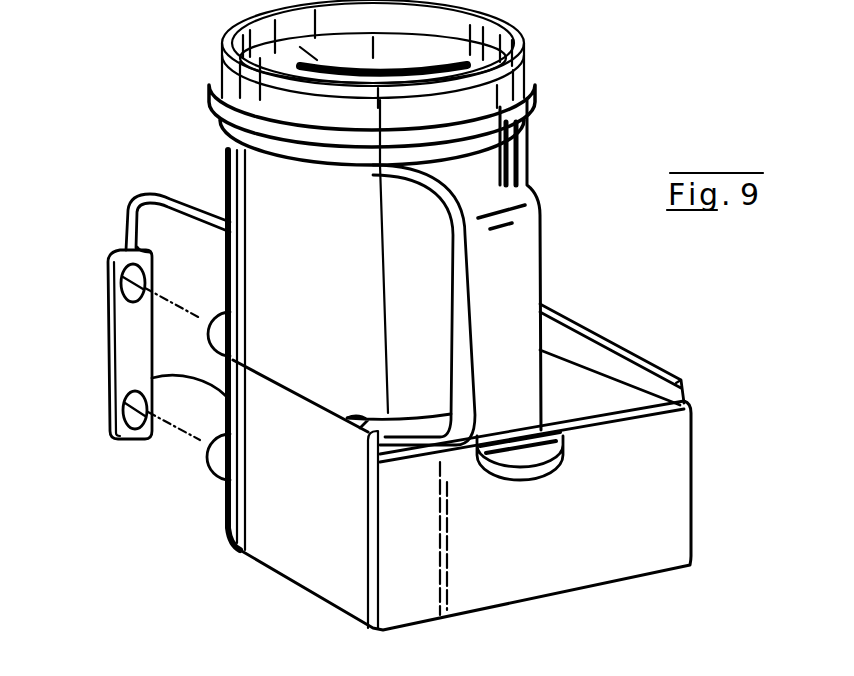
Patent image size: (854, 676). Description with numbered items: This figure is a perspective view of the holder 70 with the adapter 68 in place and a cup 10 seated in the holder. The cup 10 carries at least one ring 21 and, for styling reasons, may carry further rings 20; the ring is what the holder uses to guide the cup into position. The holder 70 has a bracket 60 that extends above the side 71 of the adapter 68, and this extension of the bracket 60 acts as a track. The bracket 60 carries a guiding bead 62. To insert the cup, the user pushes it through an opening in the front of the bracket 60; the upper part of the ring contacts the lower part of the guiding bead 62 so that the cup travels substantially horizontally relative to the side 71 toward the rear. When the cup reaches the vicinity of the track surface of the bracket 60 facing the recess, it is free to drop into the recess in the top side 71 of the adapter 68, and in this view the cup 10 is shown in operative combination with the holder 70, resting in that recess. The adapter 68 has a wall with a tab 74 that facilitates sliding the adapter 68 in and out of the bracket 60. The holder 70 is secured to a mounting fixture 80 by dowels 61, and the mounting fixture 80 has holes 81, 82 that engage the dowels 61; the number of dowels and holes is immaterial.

The cup 10 is at (527, 182).
The rings 20 is at (538, 125).
The ring 21 is at (346, 418).
The bracket 60 is at (257, 520).
The dowels 61 is at (200, 463).
The guiding bead 62 is at (200, 340).
The adapter 68 is at (626, 555).
The holder 70 is at (712, 478).
The side 71 is at (553, 322).
The tab 74 is at (533, 480).
The mounting fixture 80 is at (137, 315).
The hole 81 is at (118, 258).
The hole 82 is at (113, 427).